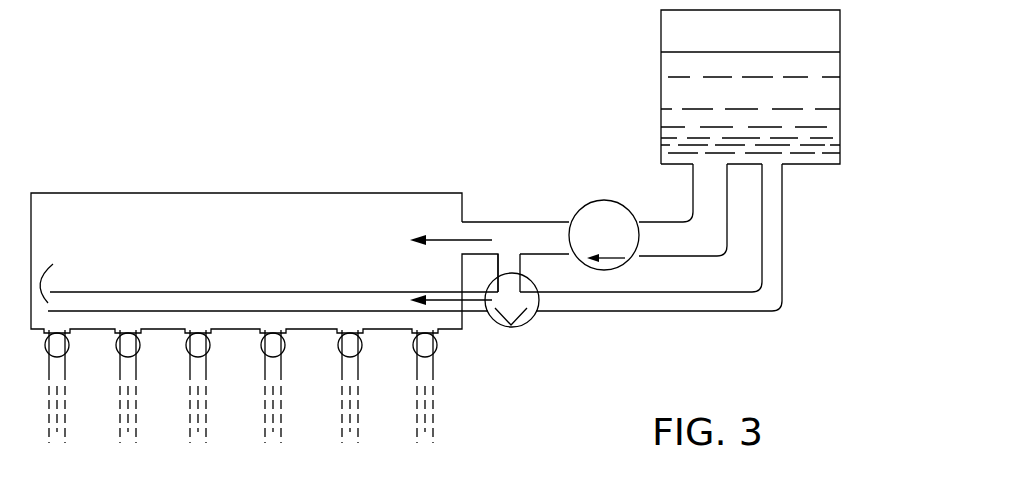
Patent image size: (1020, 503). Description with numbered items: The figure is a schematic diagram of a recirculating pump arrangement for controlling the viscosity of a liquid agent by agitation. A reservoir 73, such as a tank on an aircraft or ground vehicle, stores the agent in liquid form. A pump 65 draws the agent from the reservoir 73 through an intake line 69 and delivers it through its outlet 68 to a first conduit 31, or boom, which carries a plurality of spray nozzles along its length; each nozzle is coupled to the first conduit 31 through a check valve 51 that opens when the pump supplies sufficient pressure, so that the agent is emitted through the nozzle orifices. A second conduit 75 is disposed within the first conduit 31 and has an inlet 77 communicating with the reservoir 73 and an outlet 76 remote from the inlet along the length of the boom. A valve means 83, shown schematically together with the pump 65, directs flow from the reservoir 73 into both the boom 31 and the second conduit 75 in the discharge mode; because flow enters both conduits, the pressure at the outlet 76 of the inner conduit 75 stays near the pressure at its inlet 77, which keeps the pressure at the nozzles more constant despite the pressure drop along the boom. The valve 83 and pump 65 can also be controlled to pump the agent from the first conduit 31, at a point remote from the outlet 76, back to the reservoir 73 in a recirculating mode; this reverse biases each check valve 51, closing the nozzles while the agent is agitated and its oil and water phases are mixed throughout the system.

The first conduit 31 is at (227, 204).
The check valve 51 is at (187, 349).
The pump means 65 is at (602, 212).
The outlet 68 is at (558, 238).
The intake pipe 69 is at (655, 233).
The reservoir 73 is at (823, 97).
The second conduit 75 is at (223, 300).
The outlet 76 is at (58, 279).
The inlet 77 is at (474, 311).
The valve means 83 is at (528, 312).